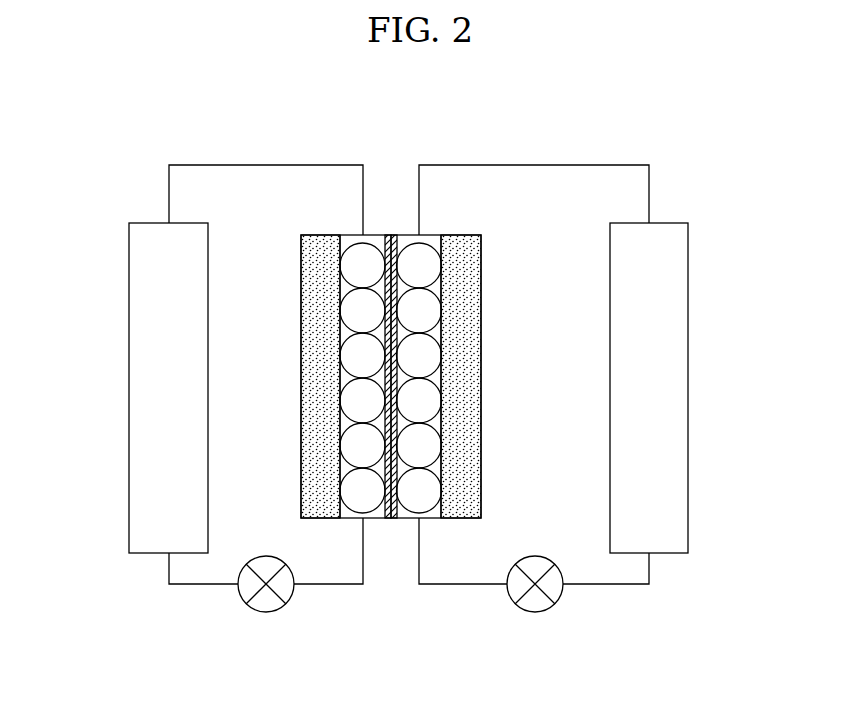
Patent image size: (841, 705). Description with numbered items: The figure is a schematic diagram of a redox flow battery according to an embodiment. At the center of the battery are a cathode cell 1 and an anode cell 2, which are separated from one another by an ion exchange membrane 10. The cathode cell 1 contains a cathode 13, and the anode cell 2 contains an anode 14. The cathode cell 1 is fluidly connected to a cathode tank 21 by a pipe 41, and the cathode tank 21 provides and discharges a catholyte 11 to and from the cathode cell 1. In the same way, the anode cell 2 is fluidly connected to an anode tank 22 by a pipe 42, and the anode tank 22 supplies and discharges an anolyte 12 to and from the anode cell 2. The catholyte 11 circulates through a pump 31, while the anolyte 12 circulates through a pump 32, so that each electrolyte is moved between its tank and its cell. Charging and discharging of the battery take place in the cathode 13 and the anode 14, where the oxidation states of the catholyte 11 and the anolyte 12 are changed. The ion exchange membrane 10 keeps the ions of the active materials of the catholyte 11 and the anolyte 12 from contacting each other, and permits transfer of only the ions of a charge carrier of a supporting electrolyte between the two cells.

The cathode cell 1 is at (294, 268).
The anode cell 2 is at (488, 267).
The ion exchange membrane 10 is at (393, 222).
The catholyte 11 is at (353, 518).
The anolyte 12 is at (428, 518).
The cathode 13 is at (320, 466).
The anode 14 is at (462, 466).
The cathode tank 21 is at (133, 289).
The anode tank 22 is at (683, 289).
The pump 31 is at (266, 612).
The pump 32 is at (535, 612).
The pipe 41 is at (272, 165).
The pipe 42 is at (535, 165).